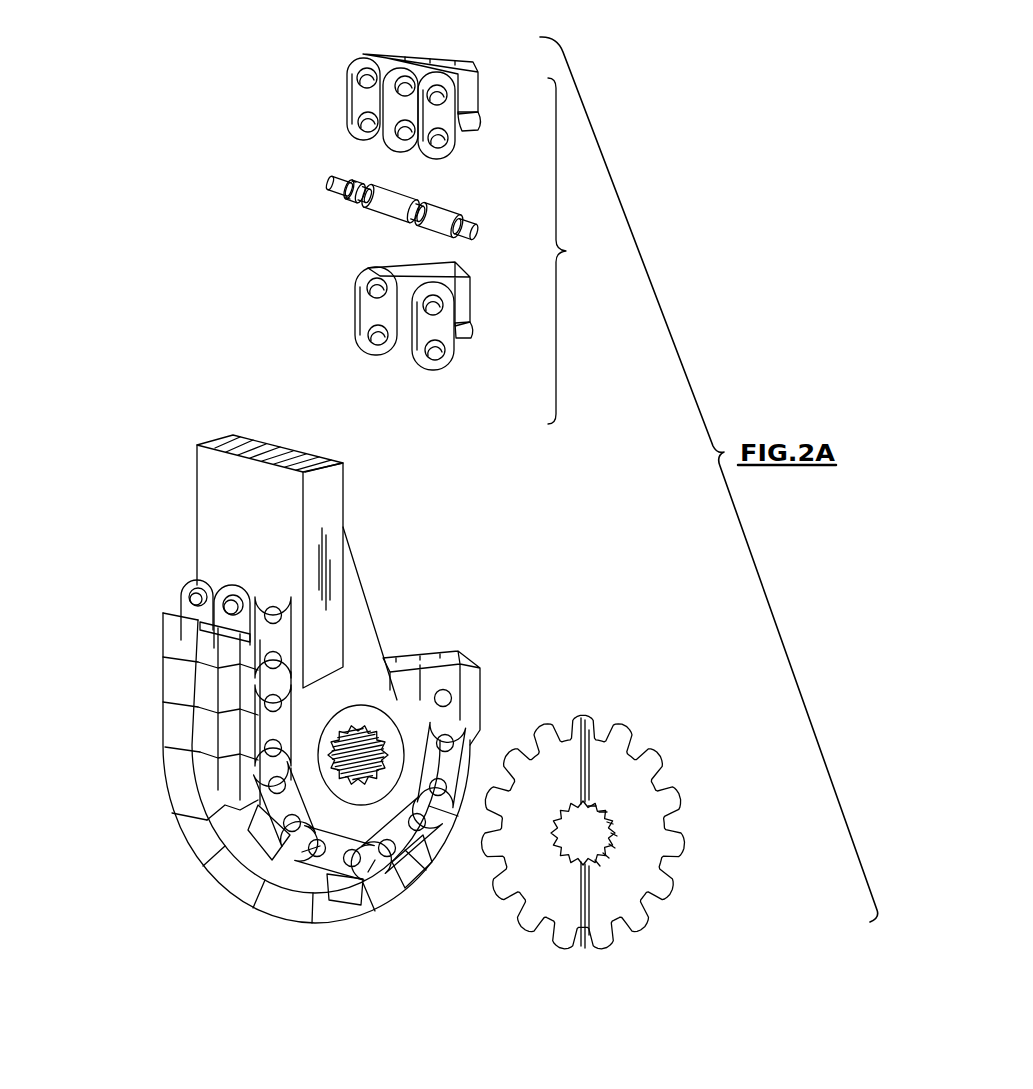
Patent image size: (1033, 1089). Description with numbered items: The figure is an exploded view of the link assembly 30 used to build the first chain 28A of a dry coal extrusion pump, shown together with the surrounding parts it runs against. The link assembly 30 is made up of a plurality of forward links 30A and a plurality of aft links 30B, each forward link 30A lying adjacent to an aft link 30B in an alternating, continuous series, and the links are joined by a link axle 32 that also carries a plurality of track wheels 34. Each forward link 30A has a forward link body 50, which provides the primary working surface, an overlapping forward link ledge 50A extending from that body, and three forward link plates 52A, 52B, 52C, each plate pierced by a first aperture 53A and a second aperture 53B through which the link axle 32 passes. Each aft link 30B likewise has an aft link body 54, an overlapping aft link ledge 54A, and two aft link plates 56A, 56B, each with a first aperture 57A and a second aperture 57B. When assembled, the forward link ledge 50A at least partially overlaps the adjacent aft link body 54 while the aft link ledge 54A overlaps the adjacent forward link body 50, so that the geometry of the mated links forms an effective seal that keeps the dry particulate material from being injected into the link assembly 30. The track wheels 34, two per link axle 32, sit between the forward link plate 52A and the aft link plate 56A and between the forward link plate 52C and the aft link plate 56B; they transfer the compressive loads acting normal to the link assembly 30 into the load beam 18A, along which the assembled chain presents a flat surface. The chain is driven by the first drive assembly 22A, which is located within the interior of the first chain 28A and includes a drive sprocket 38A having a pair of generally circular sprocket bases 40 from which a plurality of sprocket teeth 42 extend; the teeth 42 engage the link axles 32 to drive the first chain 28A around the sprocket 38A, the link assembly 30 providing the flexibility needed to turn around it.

The load beam 18A is at (215, 540).
The first drive assembly 22A is at (352, 688).
The first chain 28A is at (116, 800).
The link assembly 30 is at (347, 476).
The forward link 30A is at (340, 373).
The aft link 30B is at (344, 596).
The link axle 32 is at (363, 196).
The track wheel 34 is at (403, 218).
The drive sprocket 38A is at (616, 832).
The sprocket base 40 is at (640, 888).
The sprocket teeth 42 is at (676, 852).
The forward link body 50 is at (467, 90).
The forward link ledge 50A is at (467, 118).
The forward link plate 52A is at (387, 54).
The forward link plate 52B is at (412, 70).
The forward link plate 52C is at (447, 147).
The first aperture 53A is at (359, 66).
The second aperture 53B is at (364, 125).
The aft link body 54 is at (470, 292).
The aft link ledge 54A is at (460, 324).
The aft link plate 56A is at (360, 316).
The aft link plate 56B is at (452, 350).
The first aperture 57A is at (366, 282).
The second aperture 57B is at (368, 340).